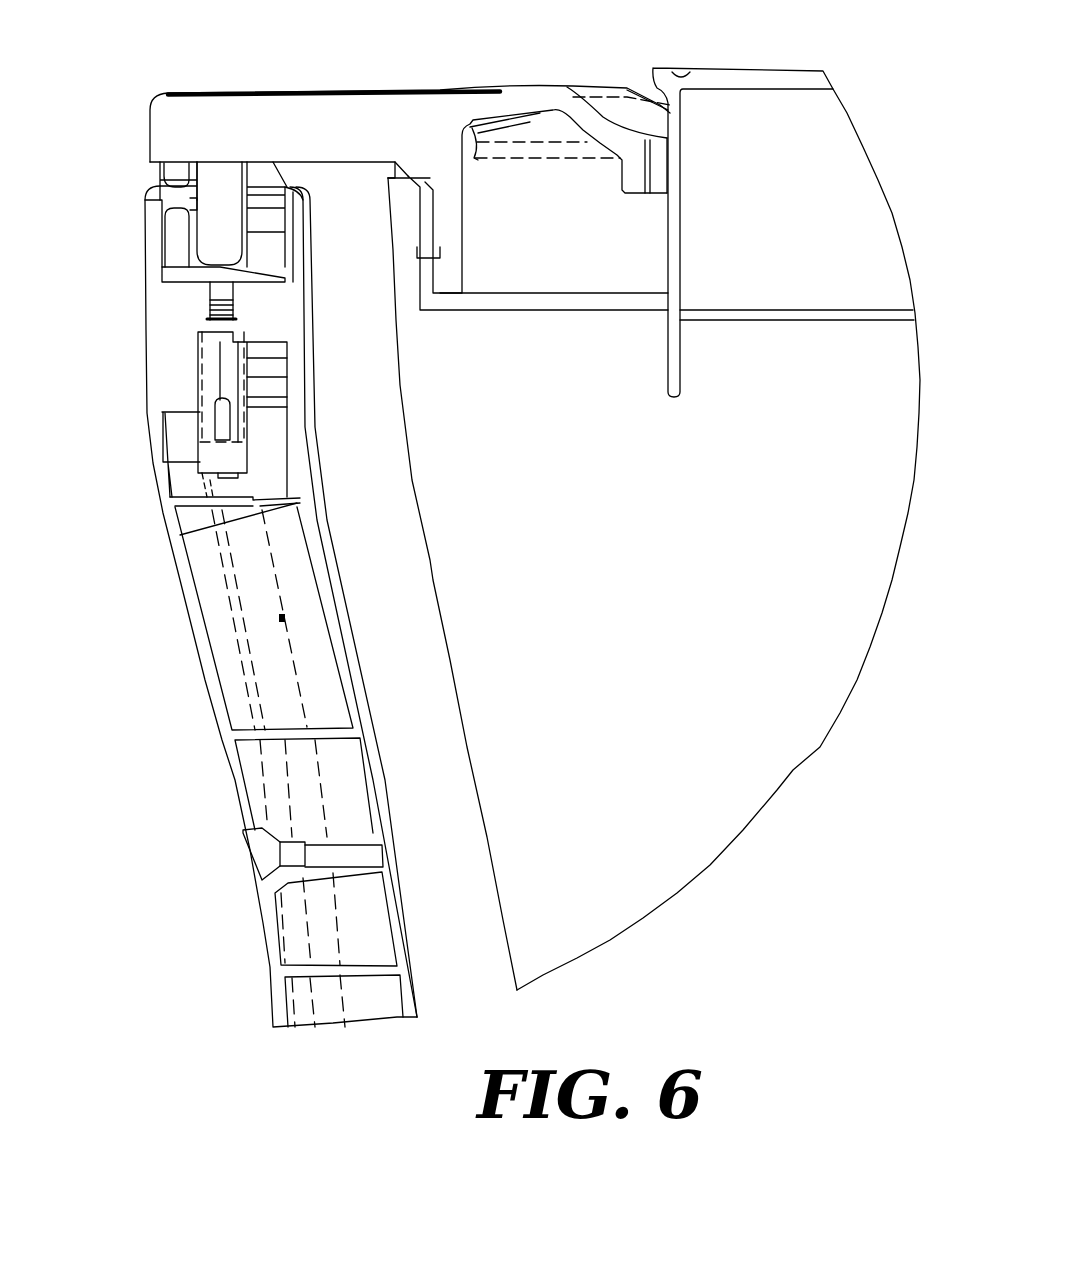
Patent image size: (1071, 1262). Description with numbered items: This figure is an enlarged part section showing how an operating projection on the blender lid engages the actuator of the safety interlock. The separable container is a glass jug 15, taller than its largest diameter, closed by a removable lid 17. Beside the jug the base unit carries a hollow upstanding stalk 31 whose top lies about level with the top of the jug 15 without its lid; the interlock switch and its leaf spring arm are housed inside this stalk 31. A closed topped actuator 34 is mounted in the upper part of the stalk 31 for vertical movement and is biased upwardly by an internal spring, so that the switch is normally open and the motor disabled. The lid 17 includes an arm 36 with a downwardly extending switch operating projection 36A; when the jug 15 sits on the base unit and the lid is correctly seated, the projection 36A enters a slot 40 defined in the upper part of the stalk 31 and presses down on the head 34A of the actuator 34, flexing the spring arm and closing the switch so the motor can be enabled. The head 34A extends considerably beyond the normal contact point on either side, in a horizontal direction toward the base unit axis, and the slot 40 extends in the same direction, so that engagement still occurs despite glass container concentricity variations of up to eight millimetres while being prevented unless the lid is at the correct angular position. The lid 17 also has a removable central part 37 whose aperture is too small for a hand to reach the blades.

The glass jug 15 is at (405, 585).
The removable lid 17 is at (567, 102).
The stalk 31 is at (198, 633).
The actuator 34 is at (220, 288).
The head 34A is at (180, 272).
The arm 36 is at (195, 118).
The switch operating projection 36A is at (220, 217).
The removable central part 37 is at (758, 82).
The slot 40 is at (160, 198).